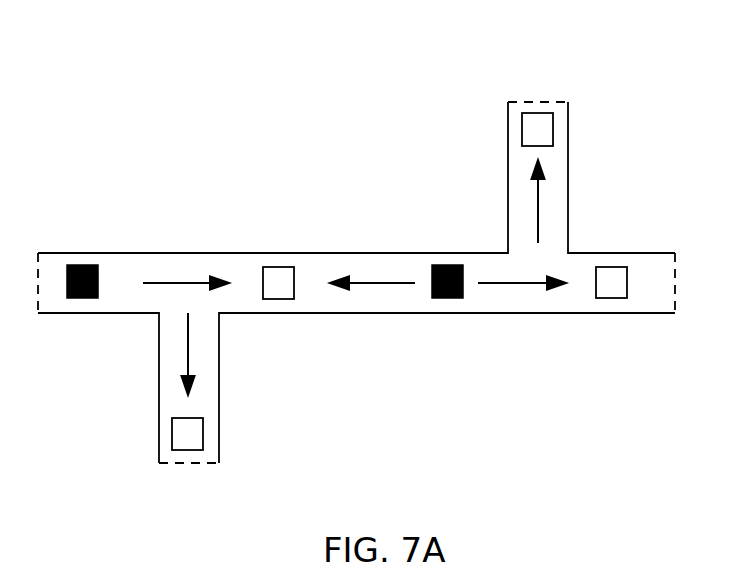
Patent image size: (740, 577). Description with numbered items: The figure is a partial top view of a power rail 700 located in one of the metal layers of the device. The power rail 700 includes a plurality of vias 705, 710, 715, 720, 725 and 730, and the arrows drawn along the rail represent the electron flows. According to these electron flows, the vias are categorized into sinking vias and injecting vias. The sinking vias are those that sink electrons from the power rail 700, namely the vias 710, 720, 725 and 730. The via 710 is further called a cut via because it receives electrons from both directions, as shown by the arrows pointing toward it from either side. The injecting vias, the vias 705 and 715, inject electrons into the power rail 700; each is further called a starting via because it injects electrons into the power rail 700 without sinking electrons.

The power rail 700 is at (164, 61).
The via 705 is at (82, 265).
The via 710 is at (278, 267).
The via 715 is at (447, 265).
The via 720 is at (534, 113).
The via 725 is at (172, 435).
The via 730 is at (614, 298).